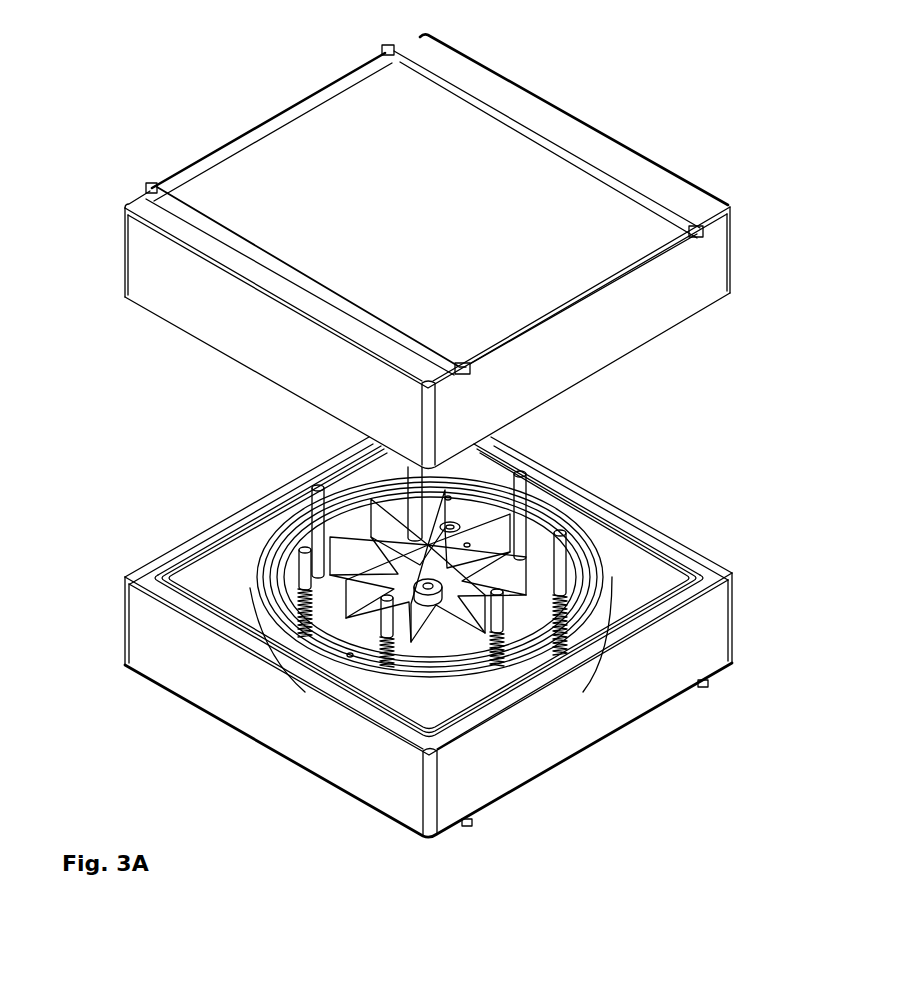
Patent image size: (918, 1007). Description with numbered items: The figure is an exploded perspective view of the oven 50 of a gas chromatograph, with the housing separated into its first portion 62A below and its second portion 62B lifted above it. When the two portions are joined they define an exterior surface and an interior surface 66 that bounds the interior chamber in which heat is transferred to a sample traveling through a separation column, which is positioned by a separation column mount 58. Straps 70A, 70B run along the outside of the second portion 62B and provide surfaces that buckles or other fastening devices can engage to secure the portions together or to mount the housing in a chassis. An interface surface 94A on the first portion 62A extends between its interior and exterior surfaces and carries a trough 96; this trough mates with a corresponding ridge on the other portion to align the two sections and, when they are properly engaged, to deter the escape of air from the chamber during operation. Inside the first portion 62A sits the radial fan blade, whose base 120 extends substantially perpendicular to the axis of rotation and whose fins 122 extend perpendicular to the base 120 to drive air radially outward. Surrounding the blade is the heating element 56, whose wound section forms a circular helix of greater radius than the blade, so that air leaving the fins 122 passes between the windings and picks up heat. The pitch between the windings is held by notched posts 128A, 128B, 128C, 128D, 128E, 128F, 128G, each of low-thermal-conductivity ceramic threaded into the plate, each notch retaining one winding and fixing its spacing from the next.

The oven 50 is at (639, 101).
The first portion 62A is at (157, 652).
The second portion 62B is at (152, 283).
The strap 70A is at (150, 184).
The strap 70B is at (550, 140).
The heating element 56 is at (460, 518).
The separation column mount 58 is at (255, 515).
The interior surface 66 is at (162, 566).
The interface surface 94A is at (712, 565).
The trough 96 is at (645, 535).
The base 120 is at (408, 598).
The fins 122 is at (408, 495).
The notched post 128A is at (325, 482).
The notched post 128B is at (565, 475).
The notched post 128C is at (575, 545).
The notched post 128D is at (500, 607).
The notched post 128E is at (350, 520).
The notched post 128F is at (298, 590).
The notched post 128G is at (299, 545).